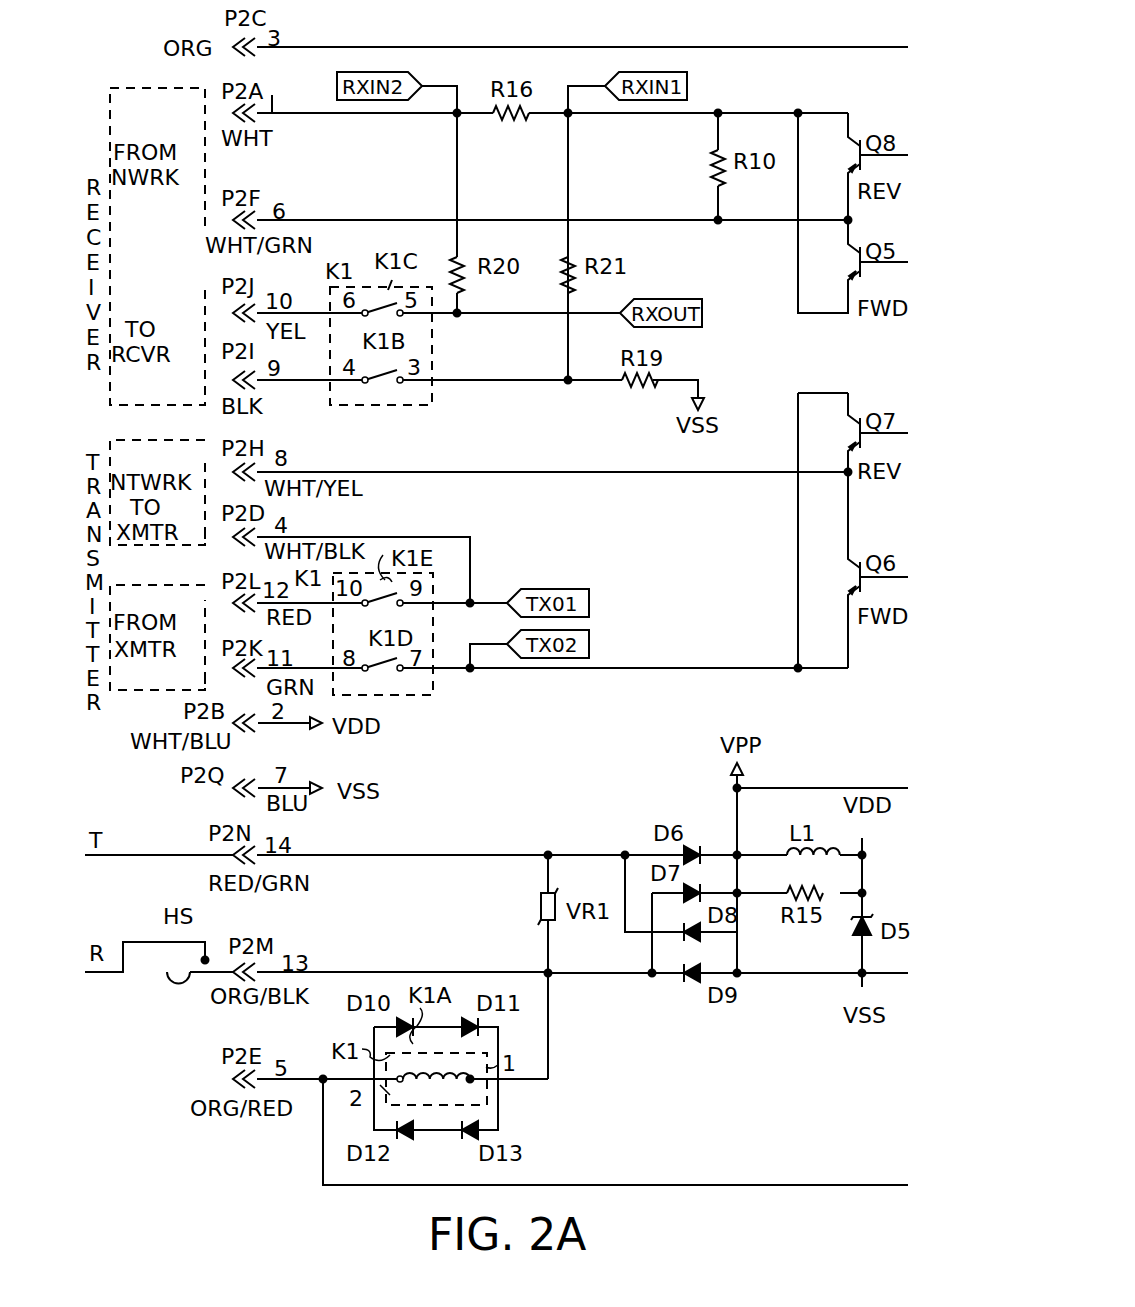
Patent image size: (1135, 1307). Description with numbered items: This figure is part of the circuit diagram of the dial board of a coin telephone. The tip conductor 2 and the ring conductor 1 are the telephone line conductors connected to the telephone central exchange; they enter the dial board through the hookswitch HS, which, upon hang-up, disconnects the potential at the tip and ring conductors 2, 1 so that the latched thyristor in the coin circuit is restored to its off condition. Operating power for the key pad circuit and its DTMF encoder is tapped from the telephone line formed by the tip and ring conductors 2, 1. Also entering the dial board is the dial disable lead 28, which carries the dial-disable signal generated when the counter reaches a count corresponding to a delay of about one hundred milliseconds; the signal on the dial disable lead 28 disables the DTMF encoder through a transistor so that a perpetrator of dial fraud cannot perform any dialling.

The dial disable lead 28 is at (317, 47).
The tip conductor 2 is at (378, 855).
The ring conductor 1 is at (362, 972).